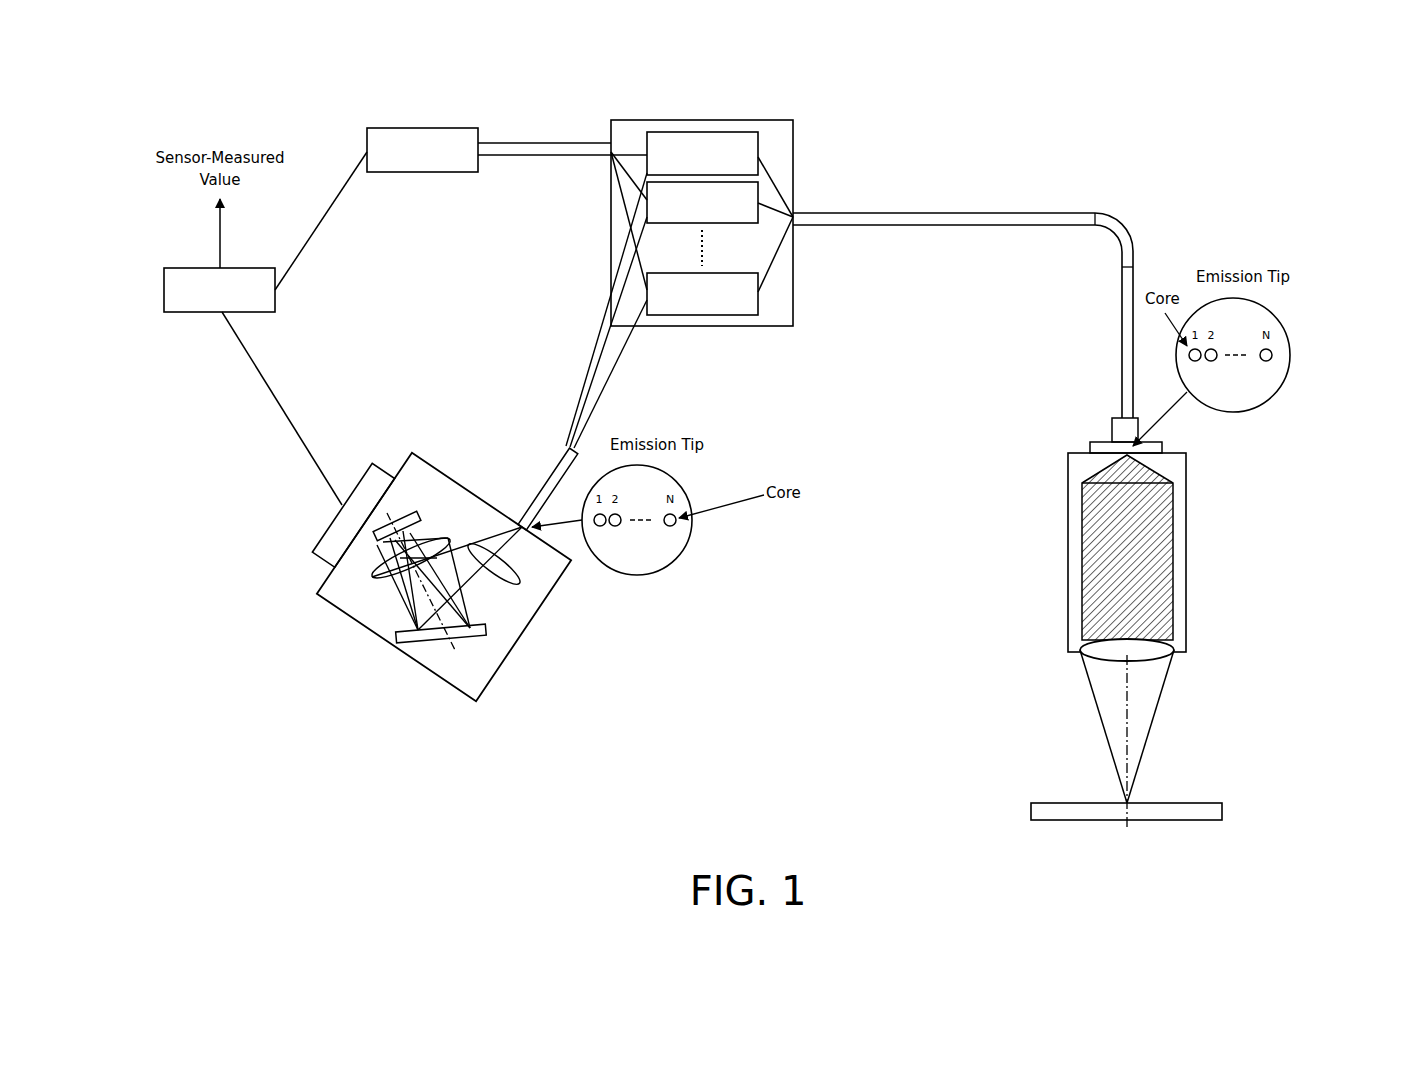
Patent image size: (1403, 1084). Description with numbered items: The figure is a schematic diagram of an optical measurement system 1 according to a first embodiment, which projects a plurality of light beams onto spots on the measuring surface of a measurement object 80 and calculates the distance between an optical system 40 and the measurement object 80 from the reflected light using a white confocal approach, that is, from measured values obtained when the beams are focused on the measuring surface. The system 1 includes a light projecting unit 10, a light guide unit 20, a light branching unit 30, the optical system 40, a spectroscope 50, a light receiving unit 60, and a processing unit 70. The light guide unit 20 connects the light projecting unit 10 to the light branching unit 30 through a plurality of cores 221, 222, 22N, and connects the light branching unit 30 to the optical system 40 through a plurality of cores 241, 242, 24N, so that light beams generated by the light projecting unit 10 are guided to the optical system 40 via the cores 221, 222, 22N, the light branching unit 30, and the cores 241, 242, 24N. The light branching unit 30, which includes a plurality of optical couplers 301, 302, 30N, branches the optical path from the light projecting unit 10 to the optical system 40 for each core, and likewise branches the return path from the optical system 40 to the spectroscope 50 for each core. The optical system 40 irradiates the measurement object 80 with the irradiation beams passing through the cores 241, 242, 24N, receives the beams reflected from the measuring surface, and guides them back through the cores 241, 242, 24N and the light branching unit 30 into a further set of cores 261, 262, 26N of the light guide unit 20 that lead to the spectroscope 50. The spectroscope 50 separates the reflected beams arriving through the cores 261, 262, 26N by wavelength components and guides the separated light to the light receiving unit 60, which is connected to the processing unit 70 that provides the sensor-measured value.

The optical measurement system 1 is at (965, 142).
The light projecting unit 10 is at (445, 128).
The light guide unit 20 is at (1055, 213).
The core 221 is at (628, 150).
The core 222 is at (623, 183).
The core 22N is at (623, 205).
The core 241 is at (1195, 361).
The core 242 is at (1211, 361).
The core 24N is at (1266, 361).
The light branching unit 30 is at (768, 212).
The optical coupler 301 is at (758, 139).
The optical coupler 302 is at (729, 223).
The optical coupler 30N is at (758, 305).
The optical system 40 is at (1068, 582).
The spectroscope 50 is at (523, 643).
The light receiving unit 60 is at (372, 463).
The core 261 is at (600, 526).
The core 262 is at (615, 526).
The core 26N is at (670, 526).
The processing unit 70 is at (240, 268).
The measurement object 80 is at (1150, 803).